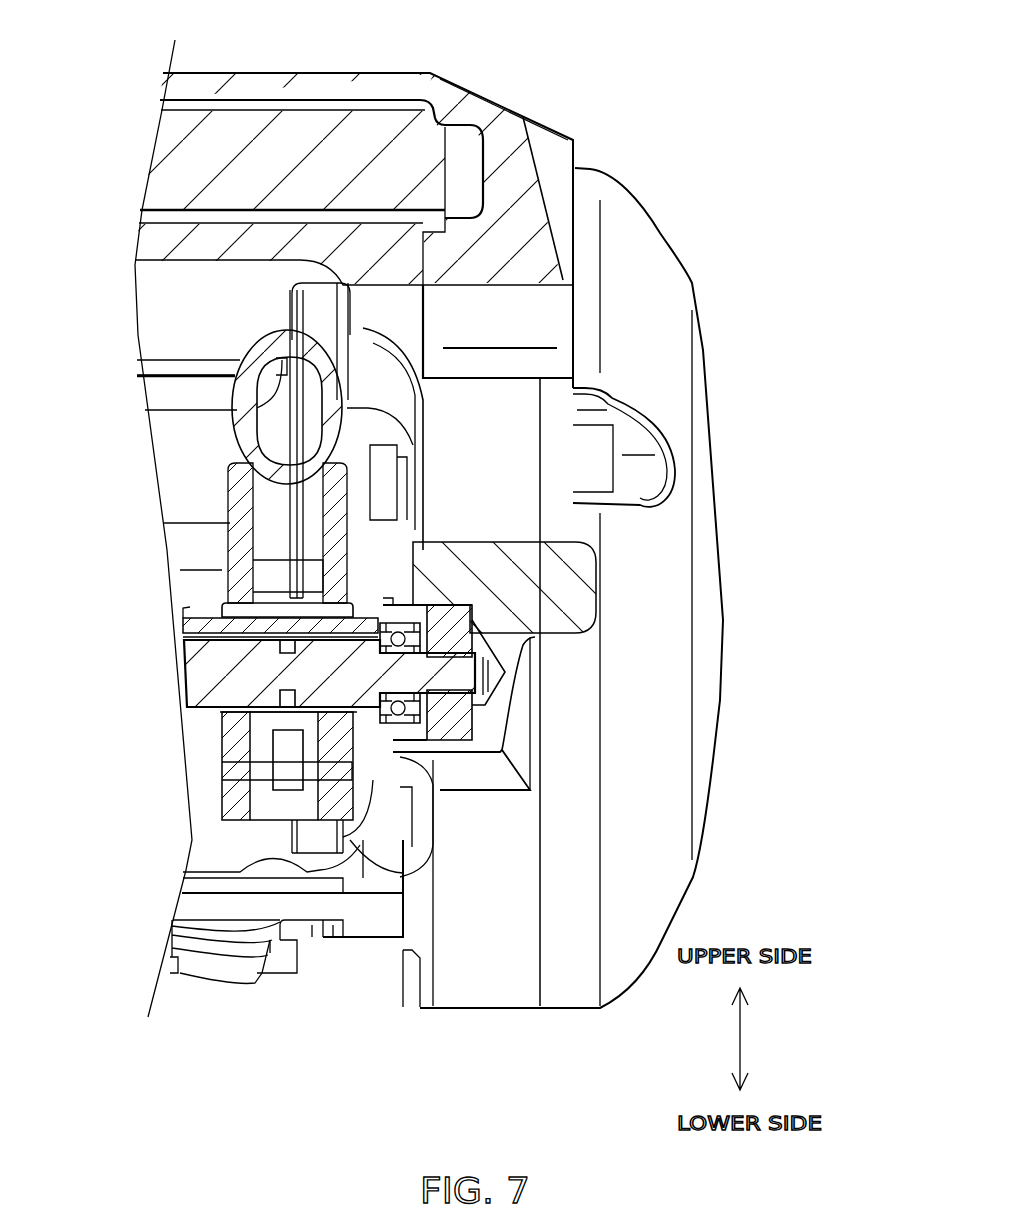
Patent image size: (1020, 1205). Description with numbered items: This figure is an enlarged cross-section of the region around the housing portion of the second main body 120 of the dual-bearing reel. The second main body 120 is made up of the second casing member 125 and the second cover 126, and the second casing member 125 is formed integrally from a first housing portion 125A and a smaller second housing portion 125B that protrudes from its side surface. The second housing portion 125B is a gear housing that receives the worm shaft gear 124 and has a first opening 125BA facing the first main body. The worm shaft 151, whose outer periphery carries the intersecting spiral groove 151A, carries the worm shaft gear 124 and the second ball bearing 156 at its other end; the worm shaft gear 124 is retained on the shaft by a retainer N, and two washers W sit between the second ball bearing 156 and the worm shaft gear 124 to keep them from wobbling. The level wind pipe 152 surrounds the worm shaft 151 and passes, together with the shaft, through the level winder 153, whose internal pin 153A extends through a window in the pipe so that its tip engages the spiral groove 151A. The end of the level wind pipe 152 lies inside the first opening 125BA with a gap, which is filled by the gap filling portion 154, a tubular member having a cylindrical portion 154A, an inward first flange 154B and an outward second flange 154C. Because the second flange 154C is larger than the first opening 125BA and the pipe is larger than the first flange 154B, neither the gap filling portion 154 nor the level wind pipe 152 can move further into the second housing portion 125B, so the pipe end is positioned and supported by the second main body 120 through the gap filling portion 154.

The second main body 120 is at (673, 153).
The second cover 126 is at (672, 323).
The second casing member 125 is at (823, 830).
The first housing portion 125A is at (515, 805).
The second housing portion 125B is at (520, 757).
The first opening 125BA is at (300, 565).
The worm shaft gear 124 is at (500, 665).
The worm shaft 151 is at (470, 690).
The spiral groove 151A is at (285, 692).
The level wind pipe 152 is at (192, 612).
The level winder 153 is at (240, 503).
The pin 153A is at (290, 733).
The gap filling portion 154 is at (823, 370).
The cylindrical portion 154A is at (435, 610).
The first flange 154B is at (460, 595).
The second flange 154C is at (388, 600).
The second ball bearing 156 is at (240, 652).
The washer W is at (492, 652).
The retainer N is at (505, 690).